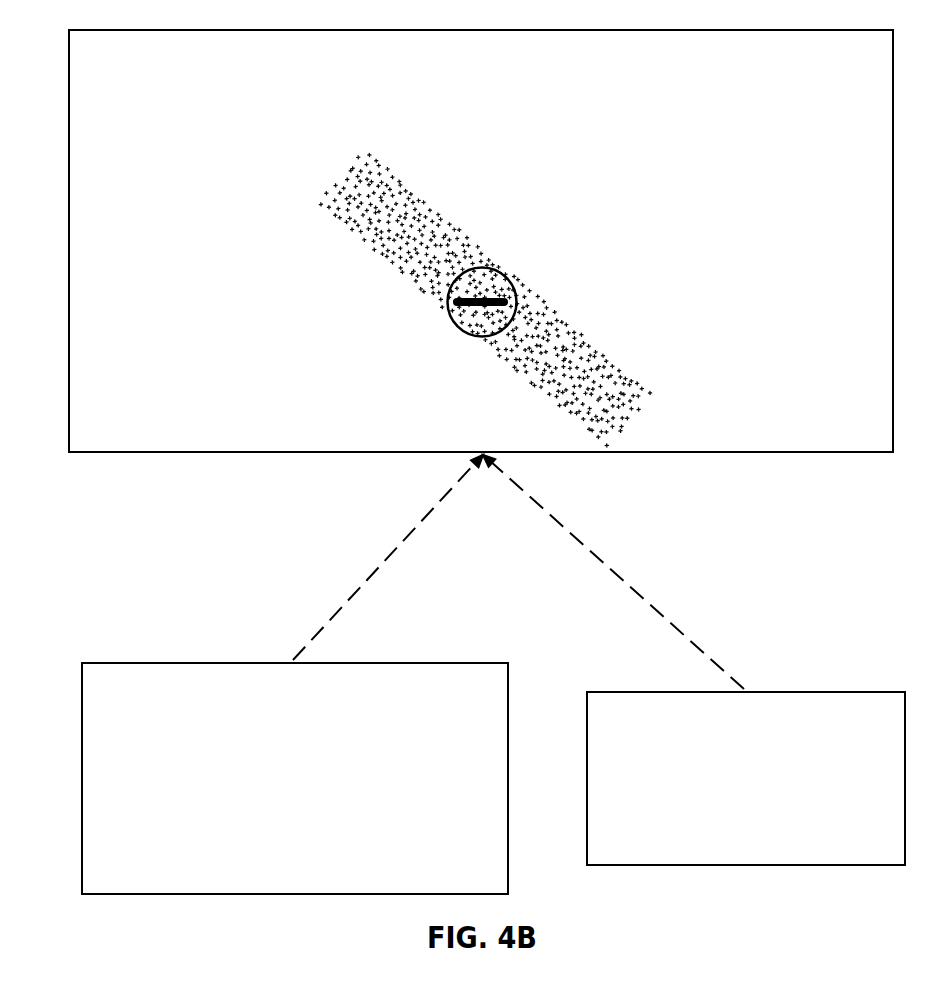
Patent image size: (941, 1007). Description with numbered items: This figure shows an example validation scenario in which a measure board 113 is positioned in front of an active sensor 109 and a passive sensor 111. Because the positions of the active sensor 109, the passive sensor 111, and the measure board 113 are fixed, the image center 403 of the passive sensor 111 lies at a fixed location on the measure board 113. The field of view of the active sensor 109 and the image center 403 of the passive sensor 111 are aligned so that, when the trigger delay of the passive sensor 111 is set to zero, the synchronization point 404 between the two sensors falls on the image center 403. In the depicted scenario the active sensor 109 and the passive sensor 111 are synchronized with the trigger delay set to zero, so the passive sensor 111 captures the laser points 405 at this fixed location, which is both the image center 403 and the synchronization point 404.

The measure board 113 is at (464, 83).
The laser points 405 is at (345, 247).
The image center of the passive sensor 403 is at (483, 297).
The synchronization point 404 is at (457, 325).
The active sensor 109 is at (279, 801).
The passive sensor 111 is at (730, 801).